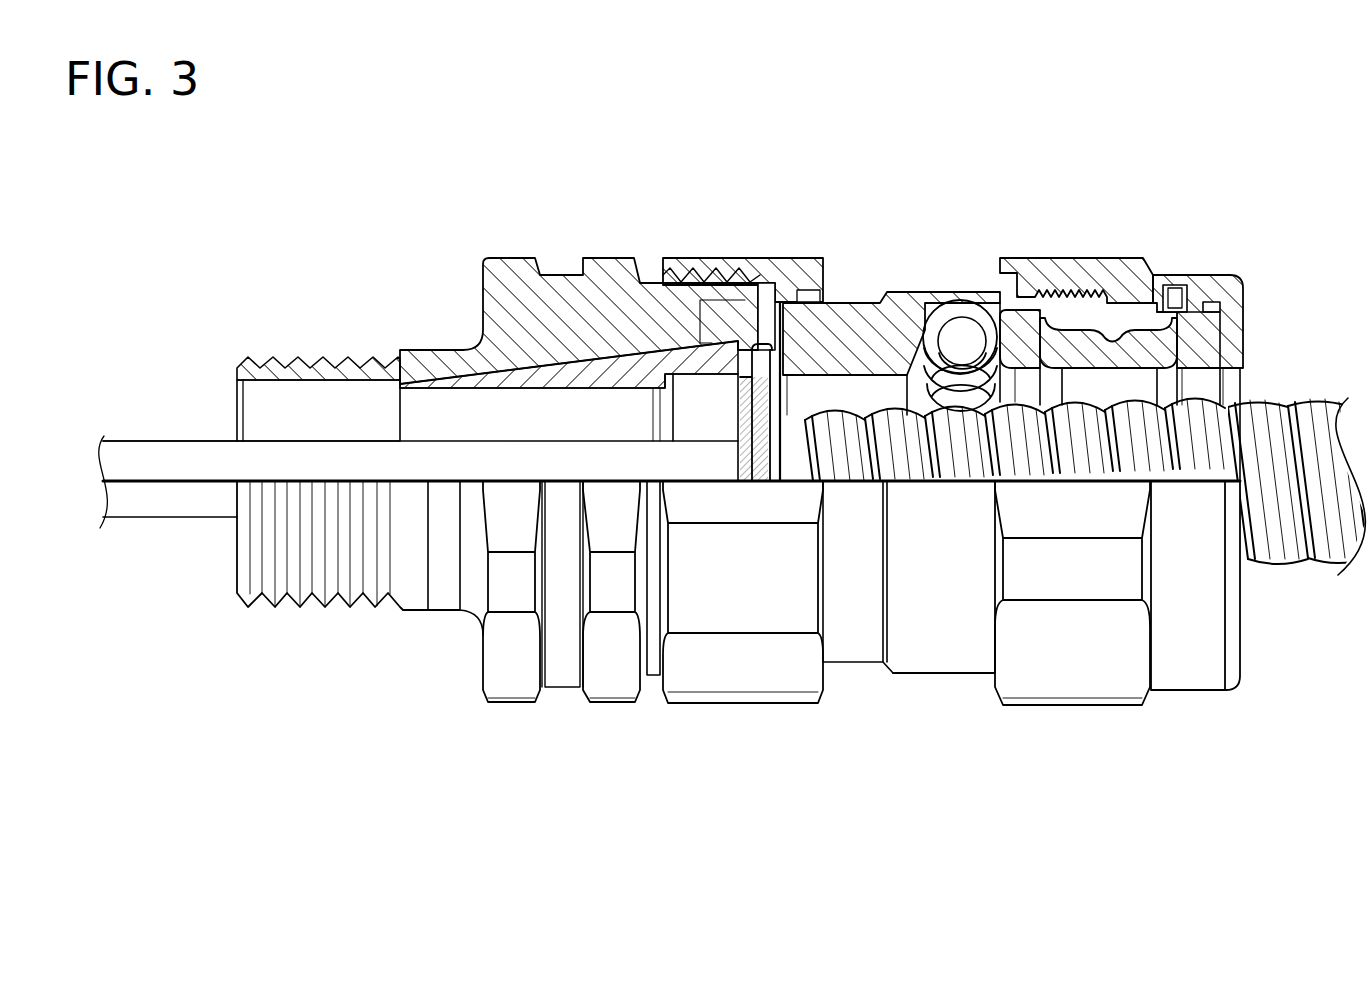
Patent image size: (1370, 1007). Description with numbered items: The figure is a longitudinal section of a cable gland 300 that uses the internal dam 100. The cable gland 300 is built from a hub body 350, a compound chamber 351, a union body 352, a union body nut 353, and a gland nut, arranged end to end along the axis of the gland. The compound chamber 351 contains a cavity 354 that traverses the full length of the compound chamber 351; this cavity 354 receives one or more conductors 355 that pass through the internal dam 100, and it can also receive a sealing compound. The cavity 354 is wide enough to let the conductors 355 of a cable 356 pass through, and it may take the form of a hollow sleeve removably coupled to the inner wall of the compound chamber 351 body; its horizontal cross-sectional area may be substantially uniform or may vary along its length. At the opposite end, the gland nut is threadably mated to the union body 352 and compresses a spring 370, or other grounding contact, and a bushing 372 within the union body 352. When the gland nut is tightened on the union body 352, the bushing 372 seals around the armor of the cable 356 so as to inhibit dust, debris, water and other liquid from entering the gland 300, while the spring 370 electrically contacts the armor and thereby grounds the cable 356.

The cable gland 300 is at (812, 748).
The hub body 350 is at (307, 600).
The compound chamber 351 is at (400, 413).
The union body 352 is at (862, 315).
The union body nut 353 is at (712, 697).
The cavity 354 is at (467, 413).
The conductors 355 is at (193, 500).
The cable 356 is at (1313, 408).
The spring 370 is at (968, 312).
The bushing 372 is at (1135, 340).
The internal dam 100 is at (702, 343).